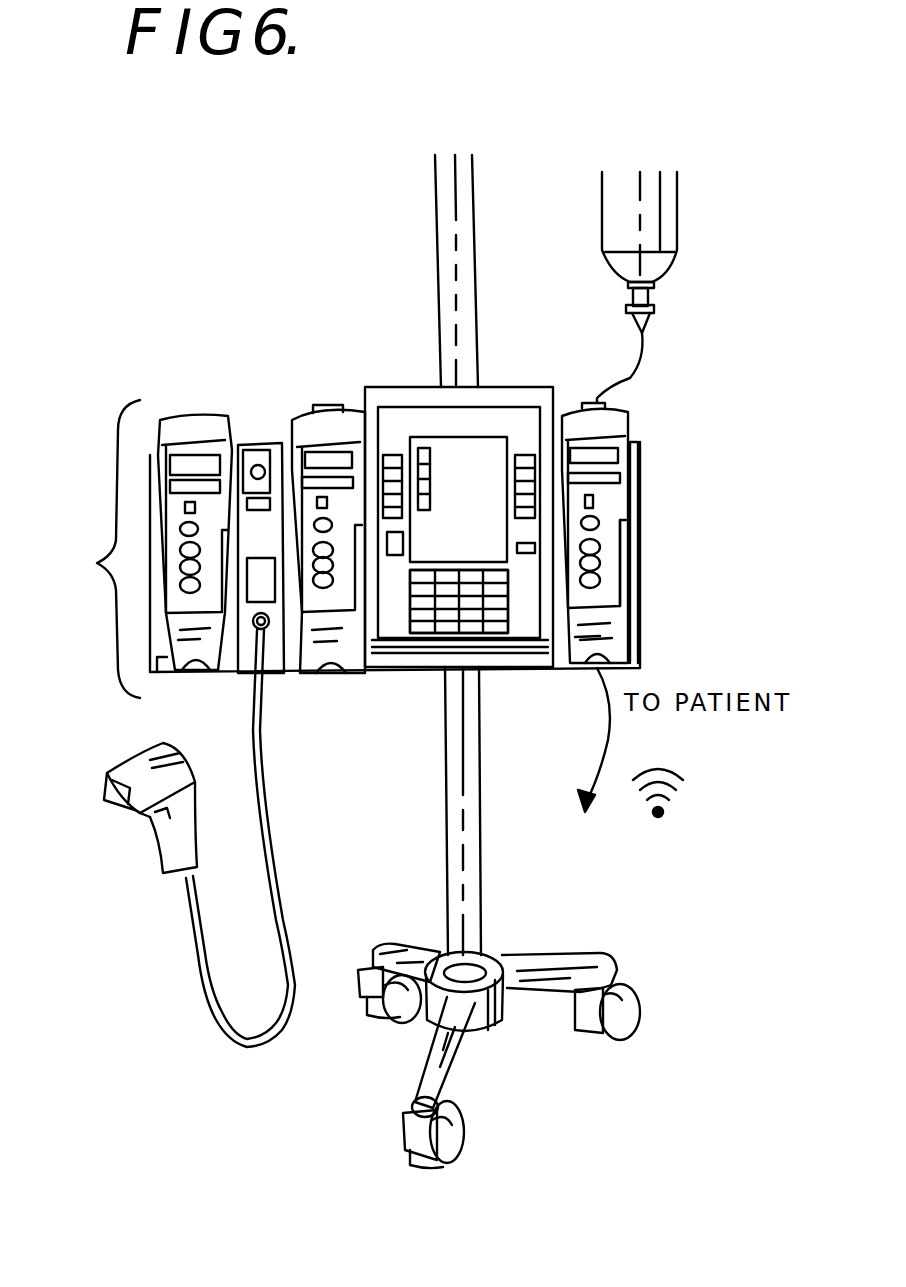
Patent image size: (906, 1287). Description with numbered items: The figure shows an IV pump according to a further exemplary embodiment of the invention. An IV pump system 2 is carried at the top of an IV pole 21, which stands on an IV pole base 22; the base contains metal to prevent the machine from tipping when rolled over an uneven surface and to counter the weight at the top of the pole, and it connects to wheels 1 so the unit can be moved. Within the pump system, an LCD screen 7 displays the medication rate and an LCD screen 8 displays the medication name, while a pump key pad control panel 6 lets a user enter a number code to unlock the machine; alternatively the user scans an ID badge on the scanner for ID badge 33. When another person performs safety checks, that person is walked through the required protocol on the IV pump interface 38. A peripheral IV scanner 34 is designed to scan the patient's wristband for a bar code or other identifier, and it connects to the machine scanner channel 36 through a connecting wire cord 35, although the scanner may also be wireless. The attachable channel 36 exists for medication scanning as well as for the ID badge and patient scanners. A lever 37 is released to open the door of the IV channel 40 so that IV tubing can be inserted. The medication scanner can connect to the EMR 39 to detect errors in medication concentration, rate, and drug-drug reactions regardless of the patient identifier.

The wheels 1 is at (637, 1017).
The IV pump system 2 is at (98, 549).
The pump key pad control panel 6 is at (512, 625).
The LCD screen 7 is at (623, 450).
The LCD screen 8 is at (627, 473).
The IV pole 21 is at (483, 792).
The IV pole base 22 is at (422, 1060).
The scanner for ID badge 33 is at (227, 443).
The peripheral IV scanner 34 is at (105, 780).
The connecting wire cord 35 is at (235, 1045).
The machine scanner channel 36 is at (253, 445).
The lever 37 is at (623, 623).
The IV pump interface 38 is at (482, 455).
The EMR 39 is at (715, 846).
The IV channel 40 is at (618, 550).